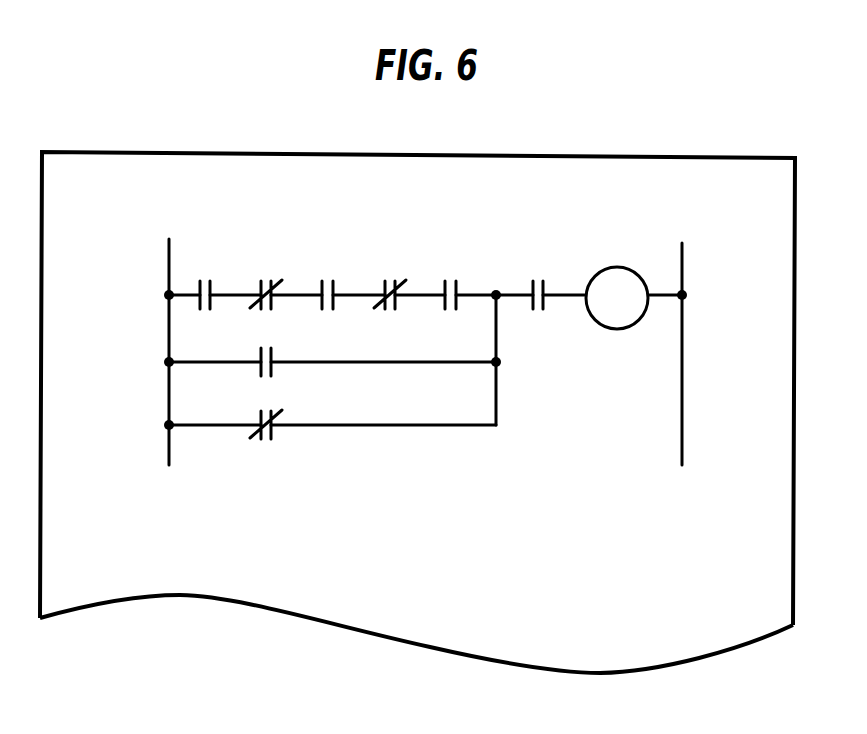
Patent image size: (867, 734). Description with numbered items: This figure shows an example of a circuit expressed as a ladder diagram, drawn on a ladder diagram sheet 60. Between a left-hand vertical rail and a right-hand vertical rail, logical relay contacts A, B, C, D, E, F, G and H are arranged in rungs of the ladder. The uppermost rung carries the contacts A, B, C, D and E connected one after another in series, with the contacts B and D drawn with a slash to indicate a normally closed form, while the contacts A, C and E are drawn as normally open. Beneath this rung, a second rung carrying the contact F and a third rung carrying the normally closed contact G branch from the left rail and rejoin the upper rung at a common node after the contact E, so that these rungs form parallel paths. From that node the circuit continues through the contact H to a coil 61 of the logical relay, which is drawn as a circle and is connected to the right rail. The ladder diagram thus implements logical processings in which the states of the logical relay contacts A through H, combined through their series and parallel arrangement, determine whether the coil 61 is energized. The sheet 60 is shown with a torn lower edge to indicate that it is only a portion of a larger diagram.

The ladder diagram sheet 60 is at (616, 155).
The coil of the logical relay 61 is at (617, 267).
The logical relay contact A is at (205, 277).
The logical relay contact B is at (266, 277).
The logical relay contact C is at (327, 277).
The logical relay contact D is at (390, 277).
The logical relay contact E is at (451, 277).
The logical relay contact F is at (266, 344).
The logical relay contact G is at (266, 407).
The logical relay contact H is at (538, 277).